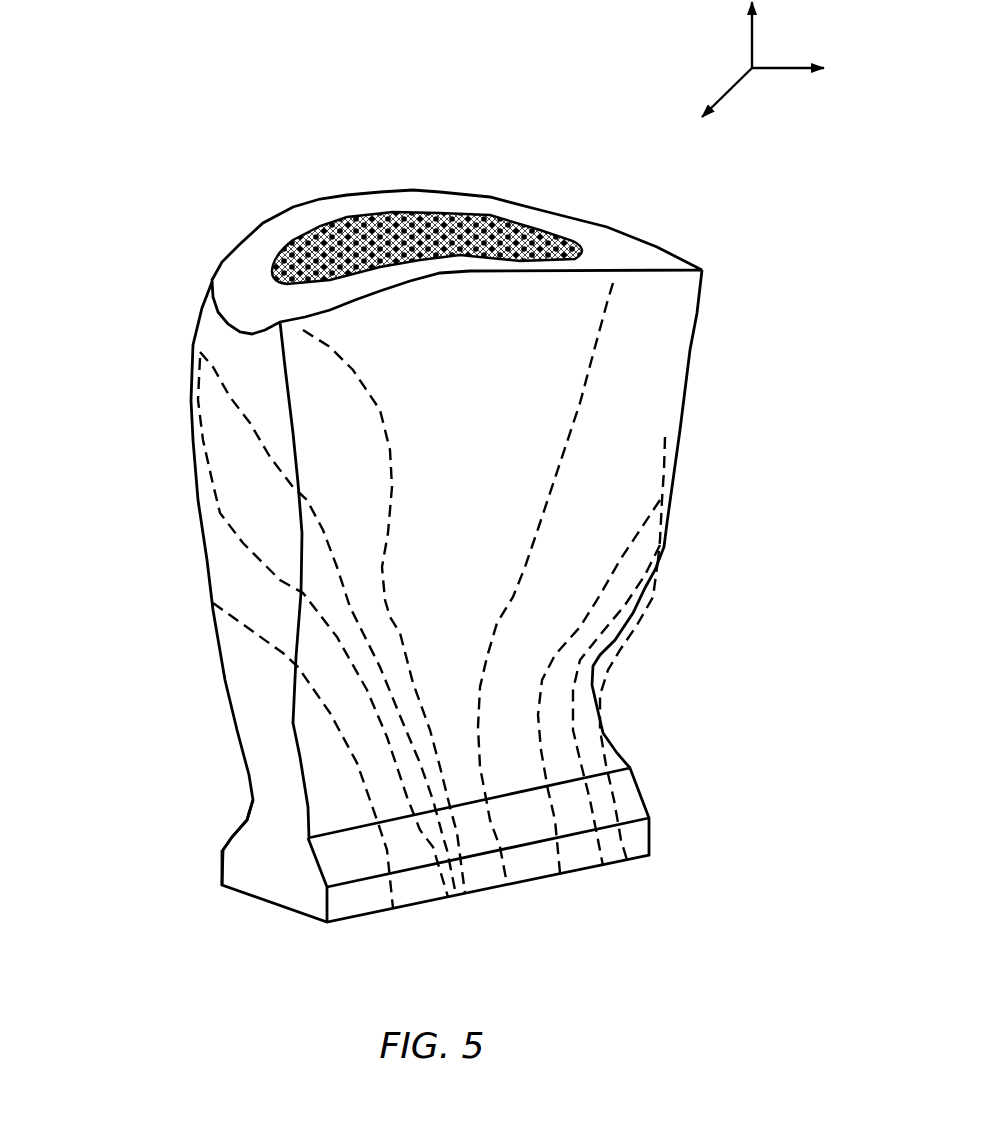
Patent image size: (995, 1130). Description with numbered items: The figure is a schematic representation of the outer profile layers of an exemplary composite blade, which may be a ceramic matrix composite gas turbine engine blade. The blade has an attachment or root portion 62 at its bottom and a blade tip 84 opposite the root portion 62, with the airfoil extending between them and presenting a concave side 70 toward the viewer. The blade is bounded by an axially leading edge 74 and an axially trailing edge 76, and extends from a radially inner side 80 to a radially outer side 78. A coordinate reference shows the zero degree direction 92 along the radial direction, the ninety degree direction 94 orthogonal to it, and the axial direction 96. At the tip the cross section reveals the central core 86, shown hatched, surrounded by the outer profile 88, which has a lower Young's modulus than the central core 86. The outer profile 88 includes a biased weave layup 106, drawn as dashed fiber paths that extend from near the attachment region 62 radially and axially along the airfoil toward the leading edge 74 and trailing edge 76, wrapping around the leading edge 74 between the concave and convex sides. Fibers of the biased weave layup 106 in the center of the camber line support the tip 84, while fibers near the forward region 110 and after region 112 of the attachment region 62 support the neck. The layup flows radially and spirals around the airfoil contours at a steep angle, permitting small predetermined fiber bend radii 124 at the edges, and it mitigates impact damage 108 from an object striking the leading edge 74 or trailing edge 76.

The root portion 62 is at (241, 914).
The concave side 70 is at (467, 394).
The leading edge 74 is at (160, 572).
The trailing edge 76 is at (700, 314).
The radially outer side 78 is at (618, 224).
The radially inner side 80 is at (570, 750).
The blade tip 84 is at (290, 212).
The central core 86 is at (396, 207).
The outer profile 88 is at (218, 102).
The zero degree direction 92 is at (754, 34).
The 90 degree direction 94 is at (724, 88).
The axial direction 96 is at (788, 70).
The biased weave layup 106 is at (597, 342).
The impact damage 108 is at (600, 661).
The forward region 110 is at (206, 836).
The after region 112 is at (665, 828).
The fiber bend radii 124 is at (180, 422).